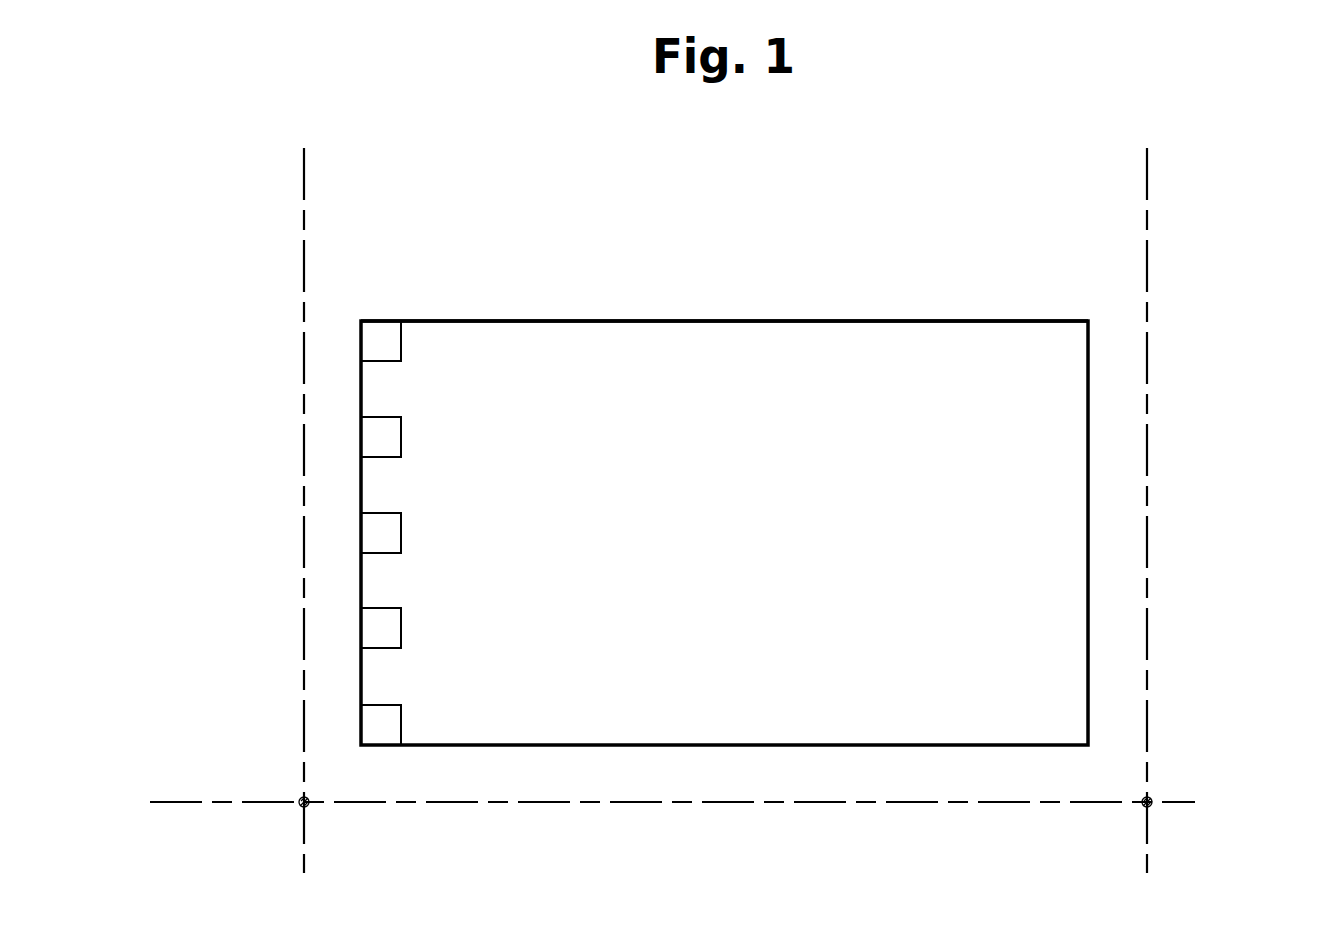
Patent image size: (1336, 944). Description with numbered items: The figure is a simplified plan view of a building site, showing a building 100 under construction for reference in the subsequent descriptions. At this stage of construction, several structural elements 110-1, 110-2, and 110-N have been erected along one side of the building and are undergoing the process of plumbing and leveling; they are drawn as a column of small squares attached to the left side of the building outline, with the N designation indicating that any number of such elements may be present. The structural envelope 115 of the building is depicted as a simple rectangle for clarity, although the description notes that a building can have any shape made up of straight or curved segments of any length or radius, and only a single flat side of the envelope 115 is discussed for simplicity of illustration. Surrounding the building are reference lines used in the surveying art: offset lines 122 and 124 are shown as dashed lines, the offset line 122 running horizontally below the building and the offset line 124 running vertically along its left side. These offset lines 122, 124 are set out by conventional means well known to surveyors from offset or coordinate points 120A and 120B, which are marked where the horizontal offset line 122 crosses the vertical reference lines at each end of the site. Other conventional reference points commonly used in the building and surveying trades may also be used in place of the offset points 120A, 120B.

The building 100 is at (751, 546).
The structural element 110-1 is at (401, 341).
The structural element 110-2 is at (401, 437).
The structural element 110-N is at (401, 533).
The structural envelope 115 is at (858, 324).
The offset point 120A is at (304, 802).
The offset point 120B is at (1147, 802).
The offset line 122 is at (218, 802).
The offset line 124 is at (304, 215).